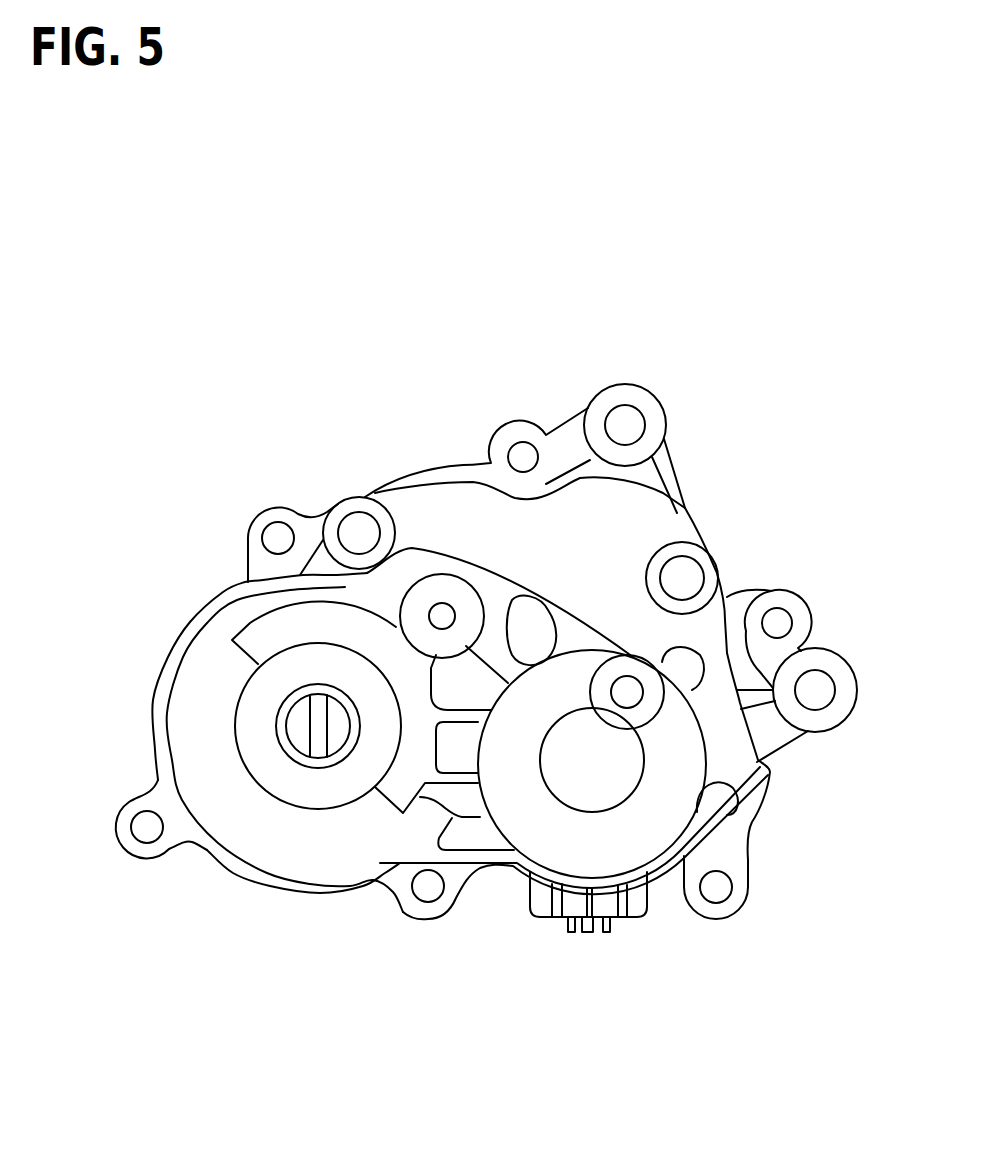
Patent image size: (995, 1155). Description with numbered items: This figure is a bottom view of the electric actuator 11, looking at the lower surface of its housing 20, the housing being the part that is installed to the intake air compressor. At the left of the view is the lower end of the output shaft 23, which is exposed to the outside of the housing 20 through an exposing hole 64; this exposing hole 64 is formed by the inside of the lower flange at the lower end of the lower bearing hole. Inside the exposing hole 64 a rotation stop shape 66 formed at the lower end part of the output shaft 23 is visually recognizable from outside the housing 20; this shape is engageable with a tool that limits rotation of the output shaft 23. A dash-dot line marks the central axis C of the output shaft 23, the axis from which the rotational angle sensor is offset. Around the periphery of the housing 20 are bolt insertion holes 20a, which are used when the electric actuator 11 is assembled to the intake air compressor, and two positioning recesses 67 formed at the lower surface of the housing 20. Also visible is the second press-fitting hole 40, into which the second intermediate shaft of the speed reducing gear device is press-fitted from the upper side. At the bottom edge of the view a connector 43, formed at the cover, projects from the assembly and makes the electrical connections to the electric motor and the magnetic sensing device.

The electric actuator 11 is at (285, 458).
The housing 20 is at (208, 667).
The bolt insertion holes 20a is at (628, 425).
The output shaft 23 is at (300, 738).
The second press-fitting hole 40 is at (441, 613).
The connector 43 is at (533, 910).
The exposing hole 64 is at (293, 690).
The rotation stop shape 66 is at (318, 748).
The positioning recesses 67 is at (358, 530).
The central axis C is at (318, 726).